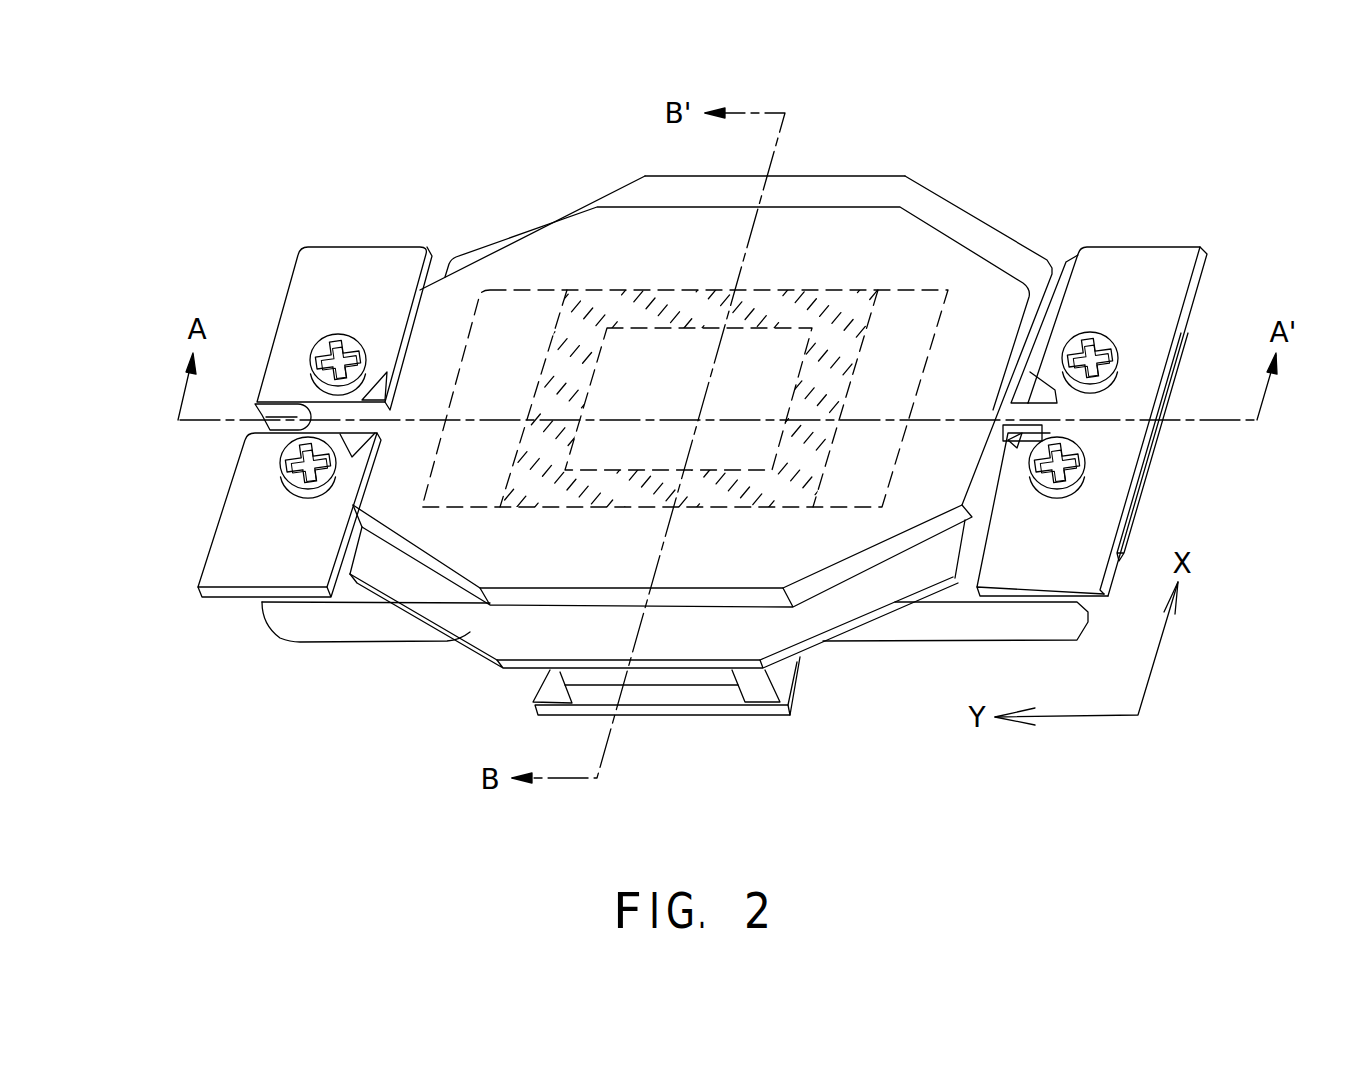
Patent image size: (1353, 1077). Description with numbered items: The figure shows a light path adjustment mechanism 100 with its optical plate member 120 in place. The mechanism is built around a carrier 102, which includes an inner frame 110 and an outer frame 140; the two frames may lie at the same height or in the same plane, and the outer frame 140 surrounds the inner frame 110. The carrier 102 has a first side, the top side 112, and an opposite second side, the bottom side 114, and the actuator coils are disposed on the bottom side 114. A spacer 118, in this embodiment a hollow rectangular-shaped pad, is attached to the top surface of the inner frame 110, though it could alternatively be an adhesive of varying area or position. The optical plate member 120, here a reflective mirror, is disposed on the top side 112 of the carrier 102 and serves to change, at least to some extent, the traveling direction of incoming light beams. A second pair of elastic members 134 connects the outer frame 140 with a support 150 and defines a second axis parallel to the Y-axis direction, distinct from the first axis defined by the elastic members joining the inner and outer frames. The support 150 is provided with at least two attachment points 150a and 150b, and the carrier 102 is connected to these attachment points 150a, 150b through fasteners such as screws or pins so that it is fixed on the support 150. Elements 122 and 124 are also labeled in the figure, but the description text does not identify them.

The light path adjustment mechanism 100 is at (240, 36).
The carrier 102 is at (514, 233).
The inner frame 110 is at (932, 288).
The top side 112 is at (933, 203).
The bottom side 114 is at (817, 647).
The spacer 118 is at (632, 307).
The optical plate member 120 is at (532, 597).
The side wall 122 is at (433, 545).
The base bracket 124 is at (555, 608).
The second pair of elastic members 134 is at (362, 413).
The outer frame 140 is at (822, 180).
The support 150 is at (355, 257).
The attachment point 150a is at (325, 338).
The attachment point 150b is at (1107, 340).